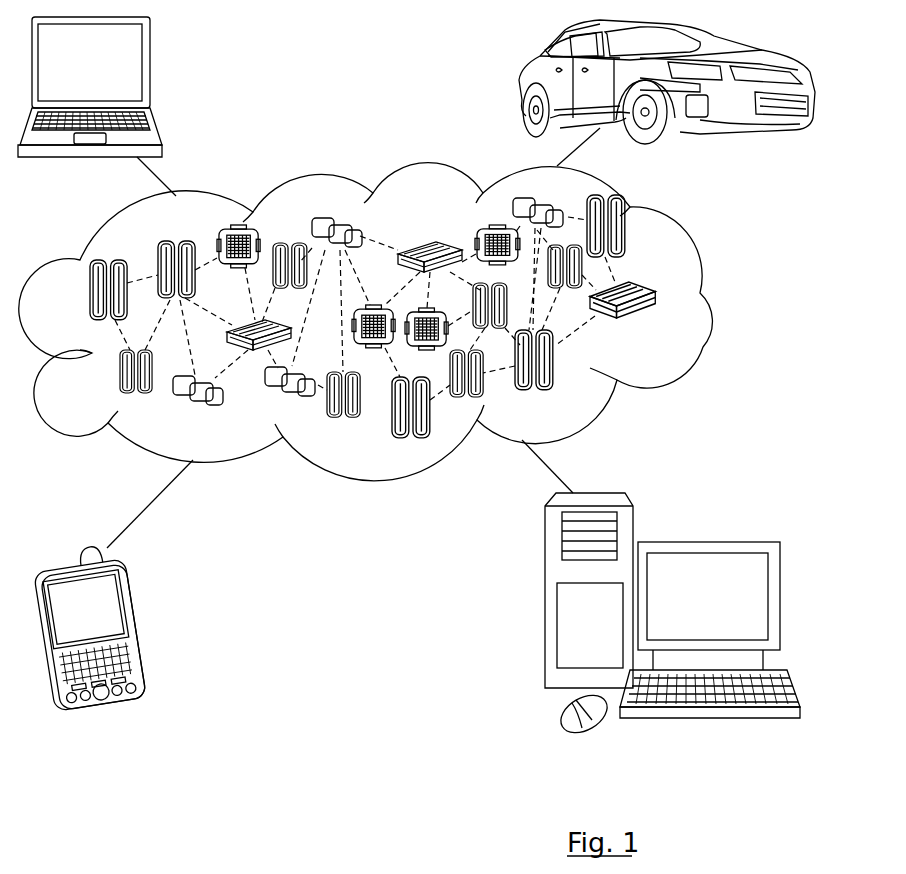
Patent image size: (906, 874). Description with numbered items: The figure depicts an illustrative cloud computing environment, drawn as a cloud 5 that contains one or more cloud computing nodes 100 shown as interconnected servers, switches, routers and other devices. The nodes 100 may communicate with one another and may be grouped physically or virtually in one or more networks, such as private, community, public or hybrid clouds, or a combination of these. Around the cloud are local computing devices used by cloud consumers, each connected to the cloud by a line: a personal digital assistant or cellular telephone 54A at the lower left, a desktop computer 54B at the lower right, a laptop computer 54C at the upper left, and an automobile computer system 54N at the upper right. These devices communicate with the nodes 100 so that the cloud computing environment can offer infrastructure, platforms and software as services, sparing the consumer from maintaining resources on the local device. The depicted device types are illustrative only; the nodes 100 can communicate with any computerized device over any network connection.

The network cloud 5 is at (705, 300).
The cloud computing nodes 100 is at (422, 316).
The personal digital assistant (PDA) or cellular telephone 54A is at (140, 623).
The desktop computer 54B is at (708, 541).
The laptop computer 54C is at (150, 68).
The automobile computer system 54N is at (520, 82).